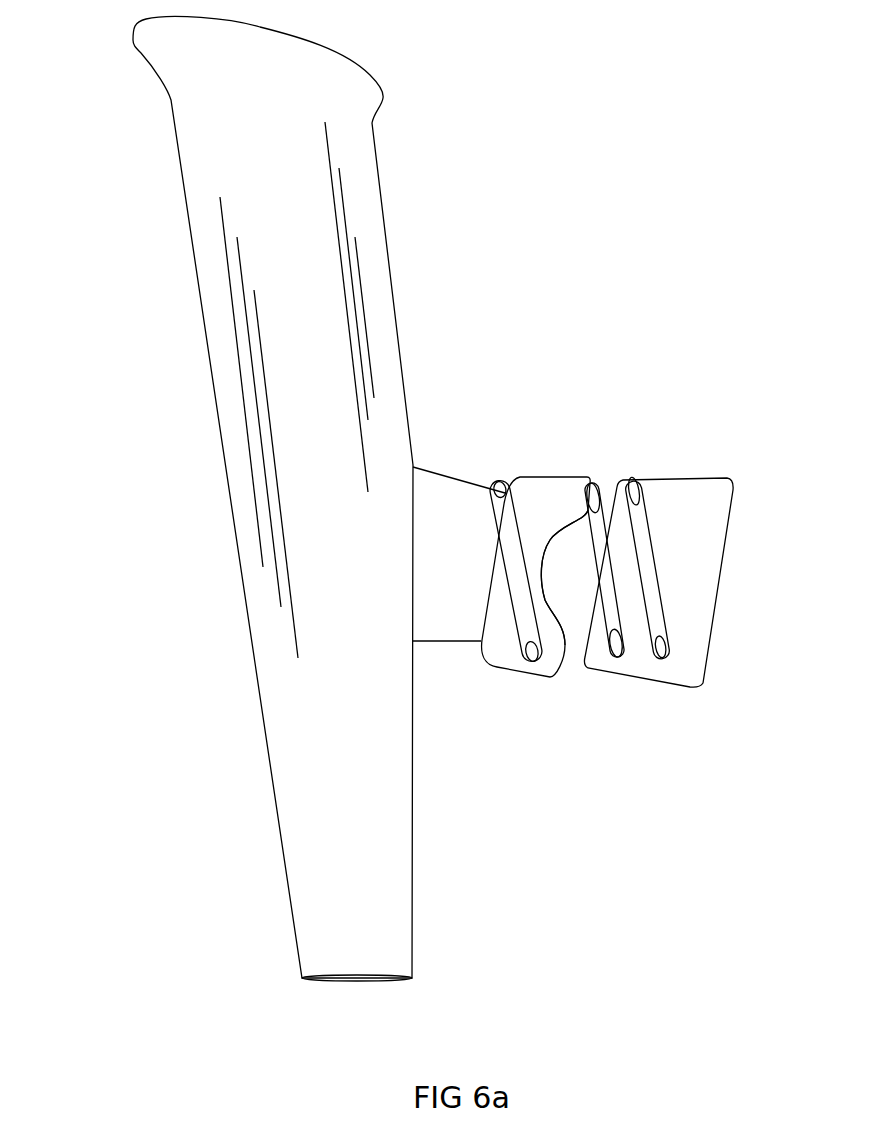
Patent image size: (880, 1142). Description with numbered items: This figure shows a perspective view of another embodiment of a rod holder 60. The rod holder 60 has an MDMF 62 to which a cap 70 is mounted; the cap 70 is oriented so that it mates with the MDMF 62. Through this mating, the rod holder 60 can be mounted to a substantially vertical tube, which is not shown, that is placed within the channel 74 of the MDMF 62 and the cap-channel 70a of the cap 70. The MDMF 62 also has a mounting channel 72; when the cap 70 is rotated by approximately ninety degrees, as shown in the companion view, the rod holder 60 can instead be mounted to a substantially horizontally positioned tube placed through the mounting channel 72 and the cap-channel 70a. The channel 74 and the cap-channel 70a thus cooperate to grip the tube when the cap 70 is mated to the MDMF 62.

The rod holder 60 is at (100, 310).
The MDMF 62 is at (528, 655).
The cap 70 is at (678, 660).
The cap-channel 70a is at (649, 440).
The mounting channel 72 is at (553, 583).
The channel 74 is at (560, 442).